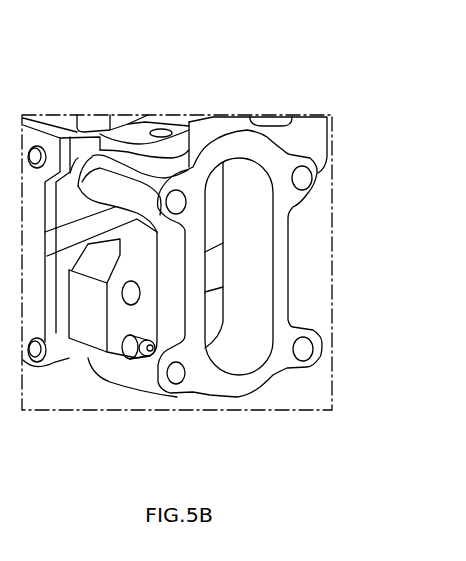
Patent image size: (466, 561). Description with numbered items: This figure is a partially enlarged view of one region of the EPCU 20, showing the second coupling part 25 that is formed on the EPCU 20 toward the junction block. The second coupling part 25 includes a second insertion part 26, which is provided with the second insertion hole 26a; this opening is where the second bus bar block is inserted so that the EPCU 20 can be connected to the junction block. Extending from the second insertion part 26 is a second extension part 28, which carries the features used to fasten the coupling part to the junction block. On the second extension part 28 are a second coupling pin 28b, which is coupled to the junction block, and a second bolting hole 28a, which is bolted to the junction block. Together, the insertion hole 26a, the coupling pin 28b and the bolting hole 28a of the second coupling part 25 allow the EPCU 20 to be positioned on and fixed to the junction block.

The EPCU 20 is at (316, 61).
The second coupling part 25 is at (80, 205).
The second insertion part 26 is at (285, 219).
The second insertion hole 26a is at (263, 268).
The second extension part 28 is at (90, 330).
The second bolting hole 28a is at (131, 293).
The second coupling pin 28b is at (144, 352).